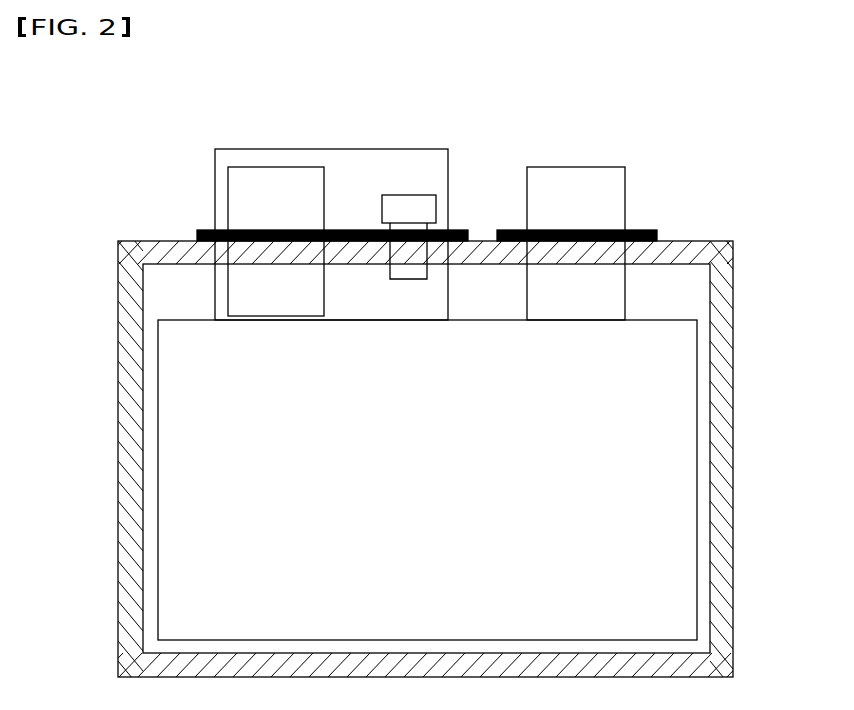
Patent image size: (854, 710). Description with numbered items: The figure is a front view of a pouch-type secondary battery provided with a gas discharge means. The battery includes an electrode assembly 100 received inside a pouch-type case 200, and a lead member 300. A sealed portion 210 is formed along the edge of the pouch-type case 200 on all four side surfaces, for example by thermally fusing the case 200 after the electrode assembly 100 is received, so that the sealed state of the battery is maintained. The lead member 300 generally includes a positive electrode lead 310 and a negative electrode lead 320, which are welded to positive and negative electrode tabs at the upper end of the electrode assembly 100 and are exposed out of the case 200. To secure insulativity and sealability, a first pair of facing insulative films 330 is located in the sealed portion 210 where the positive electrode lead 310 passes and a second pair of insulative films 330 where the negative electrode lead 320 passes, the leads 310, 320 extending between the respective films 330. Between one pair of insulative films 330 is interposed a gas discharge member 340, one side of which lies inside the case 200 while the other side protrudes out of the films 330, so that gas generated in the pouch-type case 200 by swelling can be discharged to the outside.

The electrode assembly 100 is at (163, 446).
The pouch-type case 200 is at (118, 290).
The sealed portion 210 is at (118, 337).
The lead member 300 is at (210, 188).
The positive electrode lead 310 is at (303, 175).
The negative electrode lead 320 is at (585, 178).
The insulative films 330 is at (335, 228).
The gas discharge member 340 is at (428, 202).